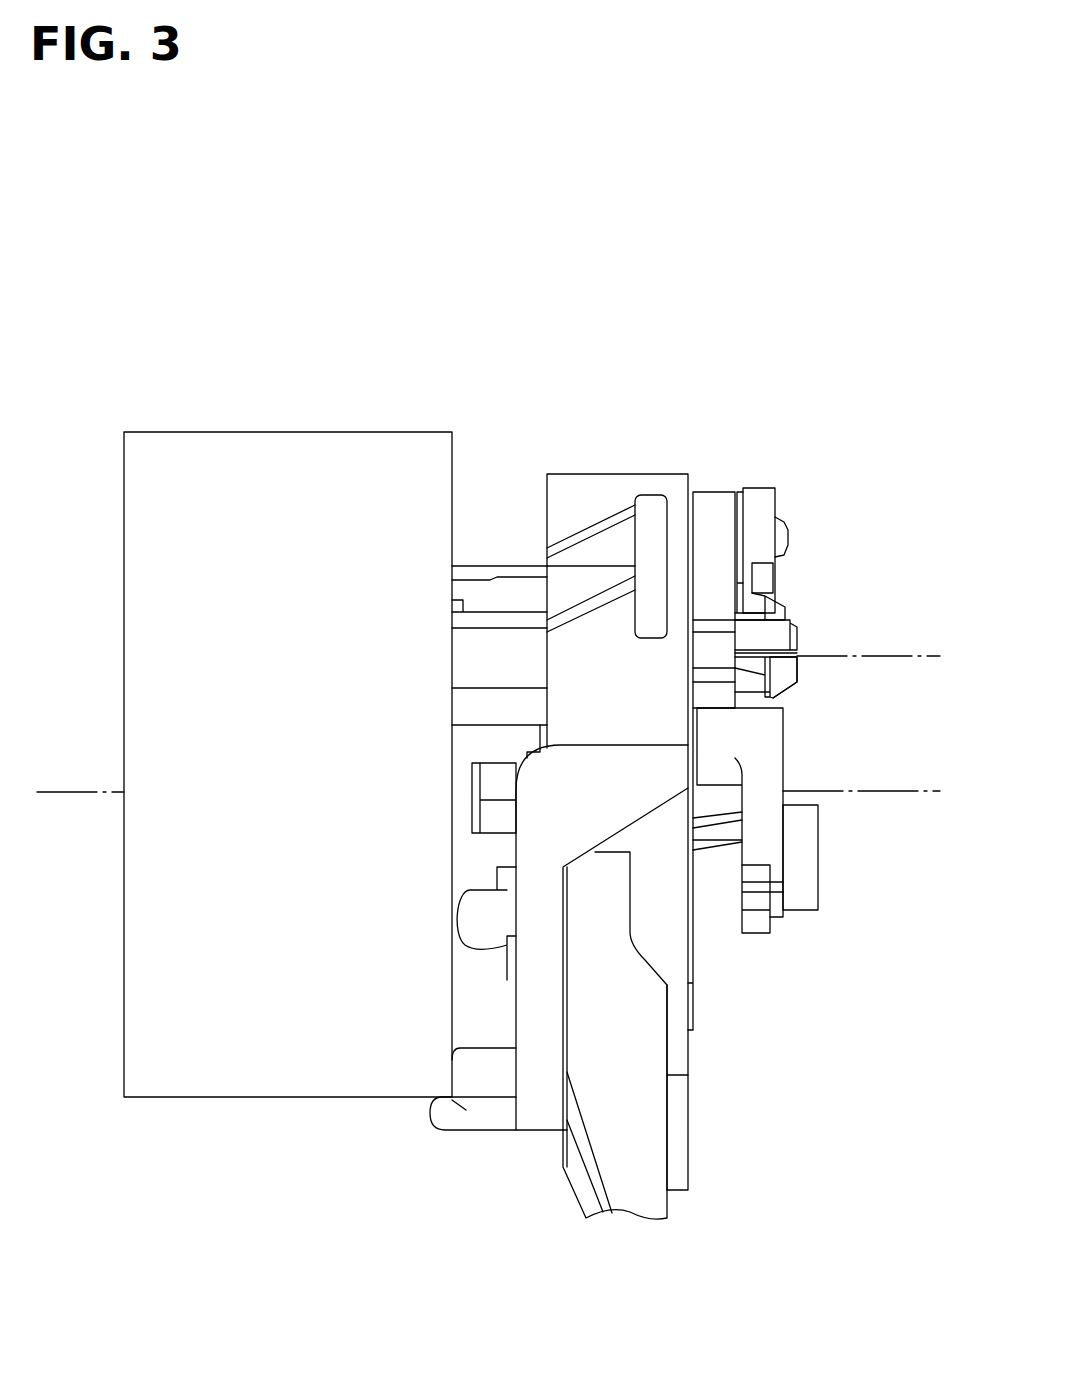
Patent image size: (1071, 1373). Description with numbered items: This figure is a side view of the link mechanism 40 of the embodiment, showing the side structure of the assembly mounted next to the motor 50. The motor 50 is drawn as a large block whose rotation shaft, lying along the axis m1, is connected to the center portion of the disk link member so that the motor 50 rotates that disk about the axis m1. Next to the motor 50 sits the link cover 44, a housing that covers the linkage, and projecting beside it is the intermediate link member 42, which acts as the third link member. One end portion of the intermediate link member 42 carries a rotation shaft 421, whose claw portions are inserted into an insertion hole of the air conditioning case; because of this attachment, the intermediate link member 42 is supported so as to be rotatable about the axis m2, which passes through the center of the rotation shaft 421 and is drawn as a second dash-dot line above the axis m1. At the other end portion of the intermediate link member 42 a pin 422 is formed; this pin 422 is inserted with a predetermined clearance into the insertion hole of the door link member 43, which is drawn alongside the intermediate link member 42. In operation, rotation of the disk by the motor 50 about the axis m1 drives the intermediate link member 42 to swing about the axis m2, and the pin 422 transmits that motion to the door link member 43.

The link mechanism 40 is at (722, 312).
The motor 50 is at (334, 432).
The link cover 44 is at (627, 474).
The intermediate link member 42 is at (713, 492).
The door link member 43 is at (762, 488).
The pin 422 is at (788, 538).
The rotation shaft 421 is at (785, 694).
The axis m1 is at (893, 791).
The axis m2 is at (893, 656).